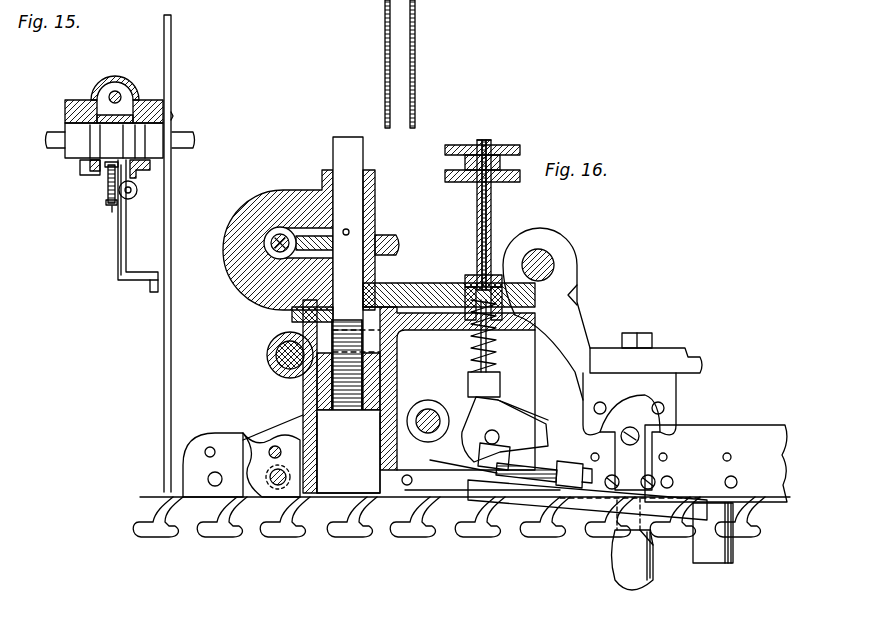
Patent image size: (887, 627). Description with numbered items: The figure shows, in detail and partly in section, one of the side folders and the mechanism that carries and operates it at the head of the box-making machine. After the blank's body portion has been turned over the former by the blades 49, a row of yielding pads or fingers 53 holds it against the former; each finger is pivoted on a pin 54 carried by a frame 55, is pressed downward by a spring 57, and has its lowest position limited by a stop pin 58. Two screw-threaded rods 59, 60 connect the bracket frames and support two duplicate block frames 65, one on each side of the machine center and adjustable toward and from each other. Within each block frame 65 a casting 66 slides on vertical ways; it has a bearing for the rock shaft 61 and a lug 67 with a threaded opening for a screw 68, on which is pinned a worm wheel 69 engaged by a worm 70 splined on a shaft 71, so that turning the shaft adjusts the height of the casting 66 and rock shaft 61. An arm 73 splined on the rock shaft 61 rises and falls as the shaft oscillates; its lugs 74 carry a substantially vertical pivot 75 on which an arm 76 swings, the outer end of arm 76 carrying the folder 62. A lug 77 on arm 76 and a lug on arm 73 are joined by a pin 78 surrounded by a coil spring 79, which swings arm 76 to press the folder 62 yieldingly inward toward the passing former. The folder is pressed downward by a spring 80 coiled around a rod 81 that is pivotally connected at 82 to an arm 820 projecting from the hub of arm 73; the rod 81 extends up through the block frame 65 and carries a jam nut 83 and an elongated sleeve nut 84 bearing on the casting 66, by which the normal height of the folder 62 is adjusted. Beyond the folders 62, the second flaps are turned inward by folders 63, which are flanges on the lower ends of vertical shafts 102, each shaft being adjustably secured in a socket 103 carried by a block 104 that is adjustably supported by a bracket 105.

In FIG. 15, the blades 49 is at (164, 414).
In FIG. 16, the blades 49 is at (385, 78).
In FIG. 16, the yielding pads or fingers 53 is at (270, 540).
In FIG. 16, the pins 54 is at (262, 468).
In FIG. 16, the frame 55 is at (392, 530).
In FIG. 16, the spring 57 is at (275, 446).
In FIG. 16, the stop pin 58 is at (278, 469).
In FIG. 16, the rod 59 is at (550, 268).
In FIG. 16, the rod 60 is at (267, 357).
In FIG. 15, the rock shaft 61 is at (60, 150).
In FIG. 16, the rock shaft 61 is at (427, 409).
In FIG. 15, the folders 62 is at (150, 290).
In FIG. 16, the folders 62 is at (712, 564).
In FIG. 16, the folders 63 is at (628, 592).
In FIG. 16, the block frames 65 is at (430, 283).
In FIG. 16, the casting 66 is at (434, 388).
In FIG. 15, the lug 67 is at (127, 88).
In FIG. 16, the lug 67 is at (332, 352).
In FIG. 15, the screw 68 is at (117, 90).
In FIG. 16, the screw 68 is at (345, 165).
In FIG. 16, the worm wheel 69 is at (398, 243).
In FIG. 16, the worm 70 is at (270, 246).
In FIG. 16, the shaft 71 is at (272, 254).
In FIG. 15, the arm 73 is at (142, 165).
In FIG. 16, the arm 73 is at (497, 468).
In FIG. 16, the lugs 74 is at (547, 432).
In FIG. 15, the pivot 75 is at (134, 199).
In FIG. 16, the pivot 75 is at (533, 420).
In FIG. 15, the arm 76 is at (118, 238).
In FIG. 16, the arm 76 is at (603, 503).
In FIG. 15, the lug 77 is at (112, 209).
In FIG. 16, the lug 77 is at (567, 462).
In FIG. 15, the pin 78 is at (108, 184).
In FIG. 15, the coil spring 79 is at (108, 202).
In FIG. 16, the spring 80 is at (496, 345).
In FIG. 15, the rod 81 is at (88, 172).
In FIG. 16, the rod 81 is at (486, 236).
In FIG. 16, the pivotal connection 82 is at (486, 434).
In FIG. 16, the jam nut 83 is at (493, 148).
In FIG. 16, the nut 84 is at (497, 182).
In FIG. 16, the vertical shaft 102 is at (650, 538).
In FIG. 16, the socket 103 is at (645, 455).
In FIG. 16, the block 104 is at (660, 400).
In FIG. 16, the bracket 105 is at (690, 363).
In FIG. 15, the arm 820 is at (90, 166).
In FIG. 16, the arm 820 is at (470, 478).